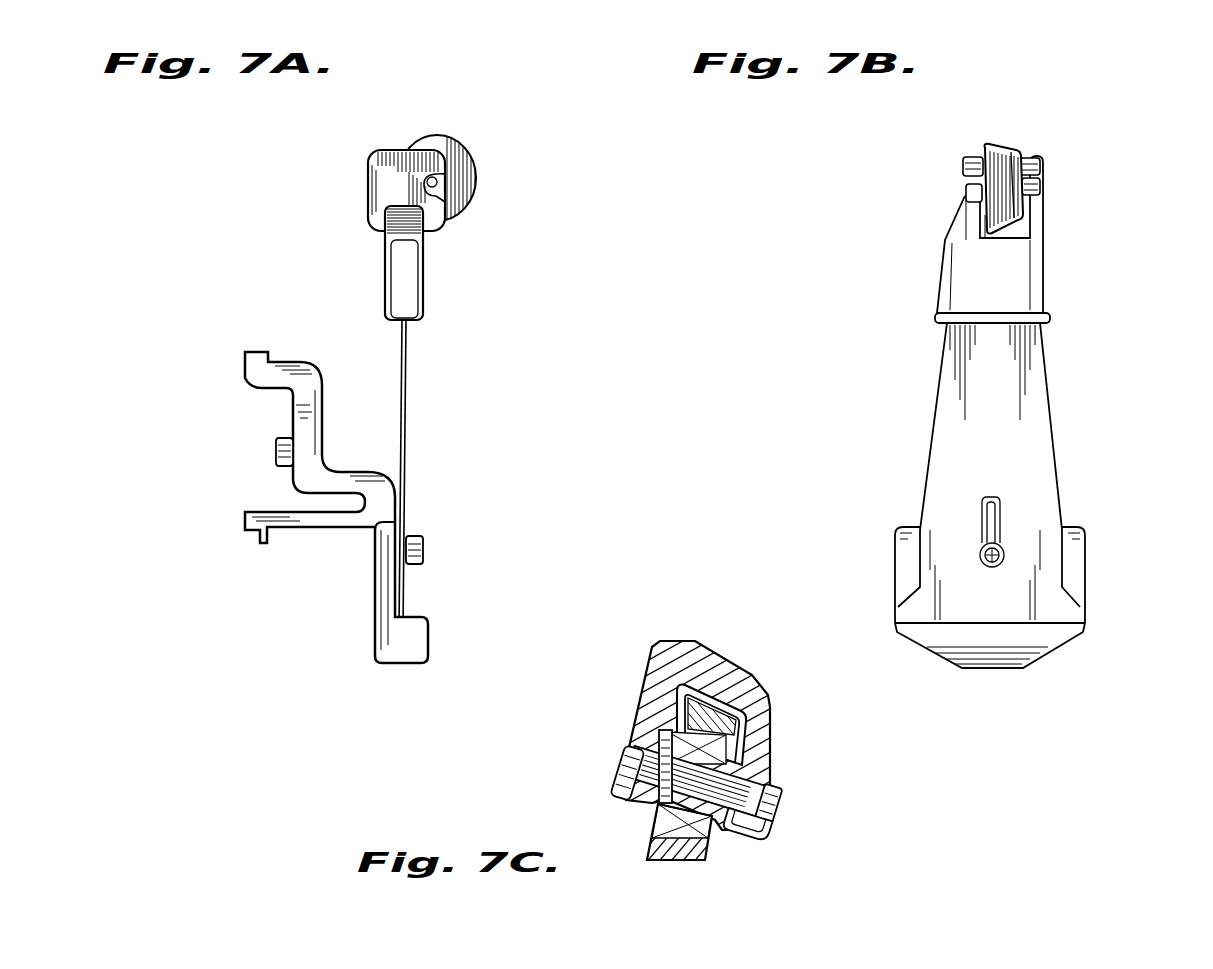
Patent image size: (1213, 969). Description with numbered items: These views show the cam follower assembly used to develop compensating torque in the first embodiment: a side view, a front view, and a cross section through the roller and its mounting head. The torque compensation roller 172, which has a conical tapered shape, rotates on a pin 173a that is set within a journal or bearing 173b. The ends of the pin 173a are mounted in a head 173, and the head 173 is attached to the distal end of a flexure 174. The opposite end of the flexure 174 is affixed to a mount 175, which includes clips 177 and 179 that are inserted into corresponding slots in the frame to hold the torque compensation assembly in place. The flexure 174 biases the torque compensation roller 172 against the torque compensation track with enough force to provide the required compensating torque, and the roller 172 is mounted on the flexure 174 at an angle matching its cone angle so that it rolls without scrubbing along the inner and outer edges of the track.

In FIG. 7A, the torque compensation roller 172 is at (470, 188).
In FIG. 7B, the torque compensation roller 172 is at (993, 162).
In FIG. 7C, the torque compensation roller 172 is at (686, 860).
In FIG. 7A, the head 173 is at (380, 192).
In FIG. 7B, the head 173 is at (1030, 260).
In FIG. 7C, the head 173 is at (668, 646).
In FIG. 7C, the pin 173a is at (742, 802).
In FIG. 7C, the journal or bearing 173b is at (665, 817).
In FIG. 7A, the flexure 174 is at (405, 405).
In FIG. 7B, the flexure 174 is at (1050, 417).
In FIG. 7A, the mount 175 is at (362, 527).
In FIG. 7B, the mount 175 is at (895, 557).
In FIG. 7A, the clip 177 is at (258, 530).
In FIG. 7A, the clip 179 is at (258, 377).